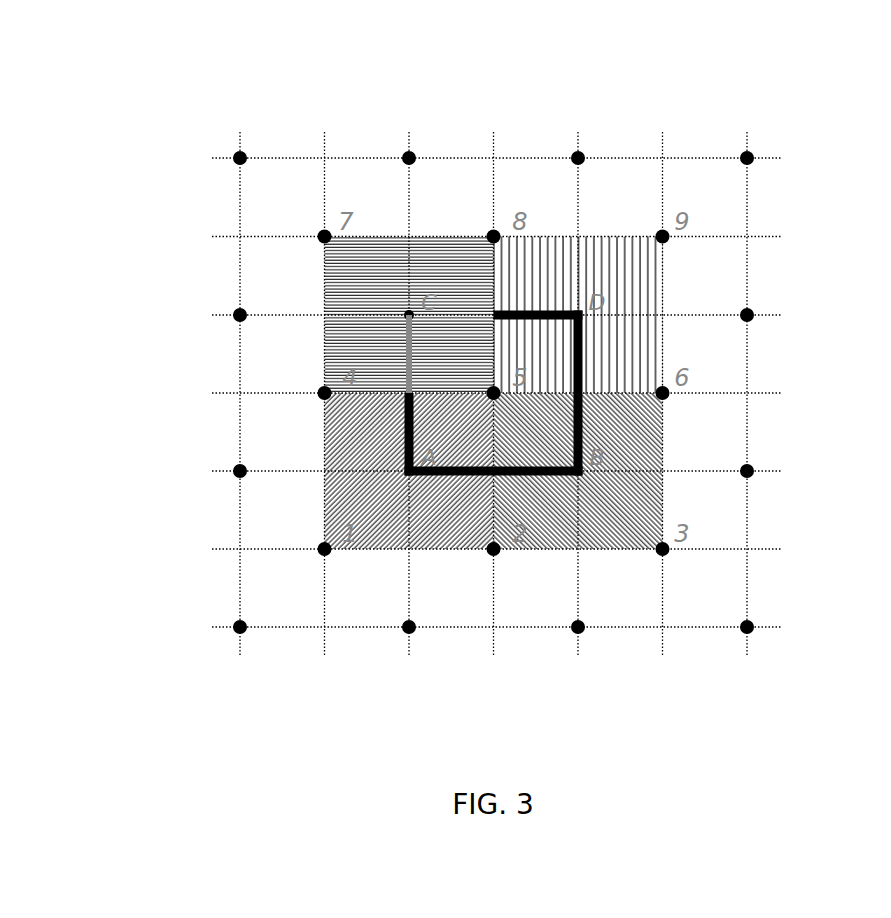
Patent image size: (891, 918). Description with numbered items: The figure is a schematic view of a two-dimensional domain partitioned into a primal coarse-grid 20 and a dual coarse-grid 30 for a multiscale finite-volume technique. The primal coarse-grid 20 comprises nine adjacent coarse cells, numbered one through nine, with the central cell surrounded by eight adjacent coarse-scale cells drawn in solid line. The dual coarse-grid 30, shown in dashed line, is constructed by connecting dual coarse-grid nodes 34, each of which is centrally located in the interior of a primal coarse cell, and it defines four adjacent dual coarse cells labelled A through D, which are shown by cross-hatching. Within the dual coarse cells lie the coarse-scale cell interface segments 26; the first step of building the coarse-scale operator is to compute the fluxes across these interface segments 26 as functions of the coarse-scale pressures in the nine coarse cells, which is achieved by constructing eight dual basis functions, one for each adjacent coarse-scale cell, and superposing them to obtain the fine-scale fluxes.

The primal coarse-grid 20 is at (724, 158).
The coarse-scale cell interface segments 26 is at (440, 318).
The dual coarse-grid 30 is at (767, 549).
The dual coarse-grid node 34 is at (325, 230).